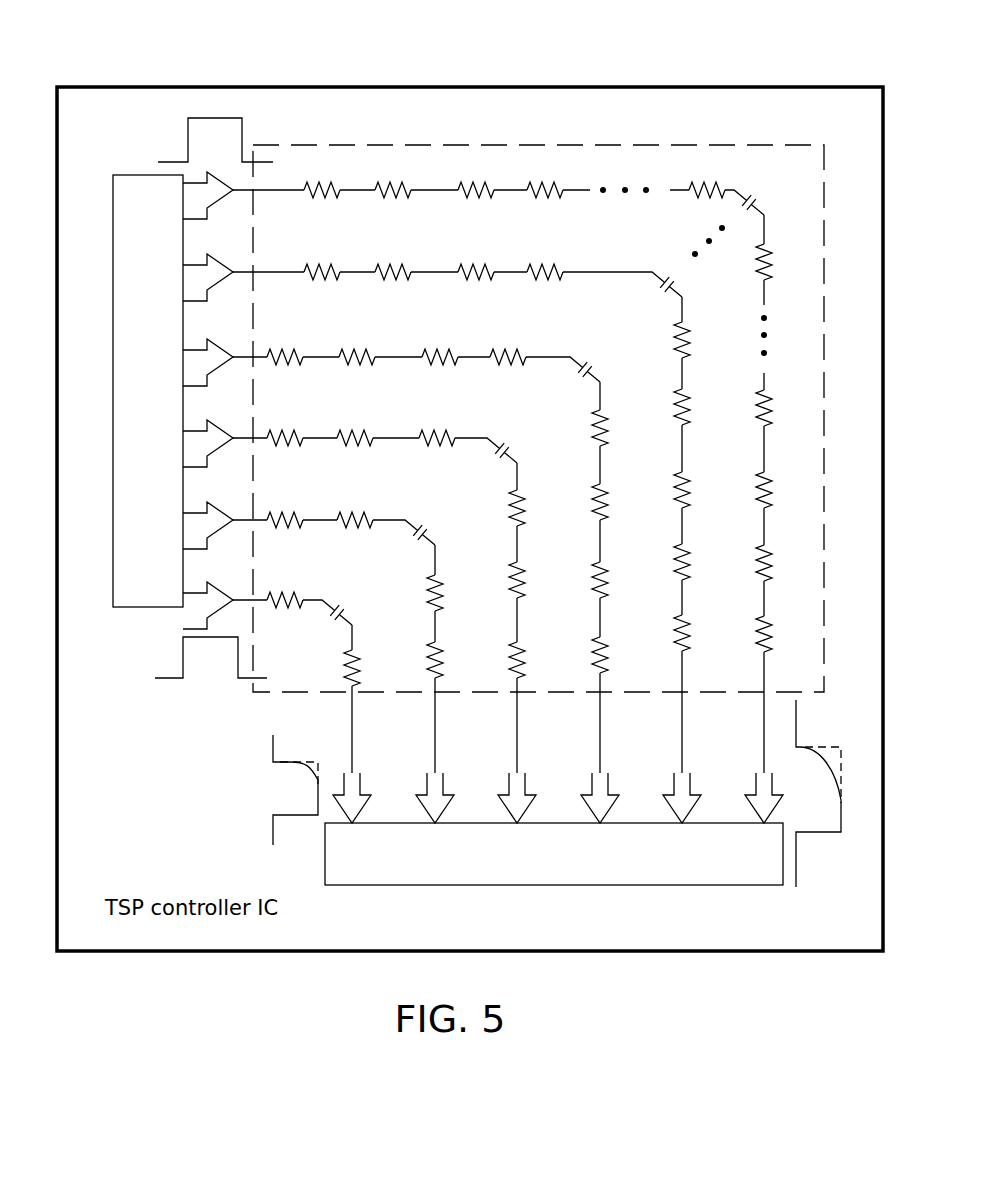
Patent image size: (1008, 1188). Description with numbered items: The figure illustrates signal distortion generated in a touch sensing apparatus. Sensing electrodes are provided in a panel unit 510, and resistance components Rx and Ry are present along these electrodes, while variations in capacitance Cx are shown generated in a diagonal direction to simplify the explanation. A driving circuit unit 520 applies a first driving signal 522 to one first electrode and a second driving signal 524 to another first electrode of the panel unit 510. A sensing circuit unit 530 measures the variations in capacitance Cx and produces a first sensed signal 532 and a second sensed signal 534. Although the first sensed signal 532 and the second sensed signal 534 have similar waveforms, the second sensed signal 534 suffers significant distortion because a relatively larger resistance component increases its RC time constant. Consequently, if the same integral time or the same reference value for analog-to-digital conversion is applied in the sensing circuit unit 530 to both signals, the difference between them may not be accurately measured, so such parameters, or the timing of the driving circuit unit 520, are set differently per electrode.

The panel unit 510 is at (500, 145).
The driving circuit unit 520 is at (131, 600).
The first driving signal 522 is at (225, 118).
The second driving signal 524 is at (172, 678).
The sensing circuit unit 530 is at (325, 871).
The first sensed signal 532 is at (273, 834).
The second sensed signal 534 is at (826, 835).